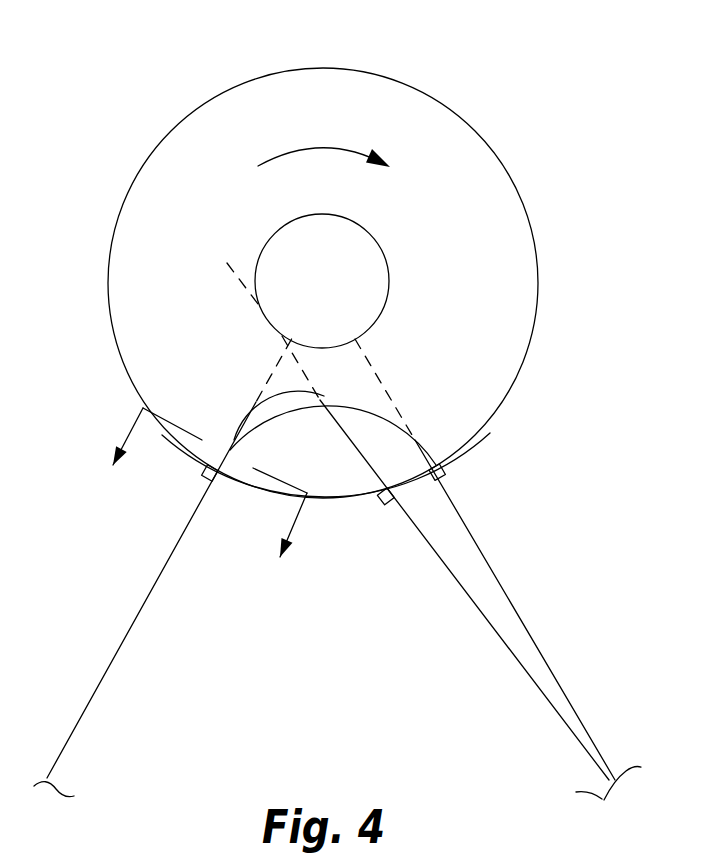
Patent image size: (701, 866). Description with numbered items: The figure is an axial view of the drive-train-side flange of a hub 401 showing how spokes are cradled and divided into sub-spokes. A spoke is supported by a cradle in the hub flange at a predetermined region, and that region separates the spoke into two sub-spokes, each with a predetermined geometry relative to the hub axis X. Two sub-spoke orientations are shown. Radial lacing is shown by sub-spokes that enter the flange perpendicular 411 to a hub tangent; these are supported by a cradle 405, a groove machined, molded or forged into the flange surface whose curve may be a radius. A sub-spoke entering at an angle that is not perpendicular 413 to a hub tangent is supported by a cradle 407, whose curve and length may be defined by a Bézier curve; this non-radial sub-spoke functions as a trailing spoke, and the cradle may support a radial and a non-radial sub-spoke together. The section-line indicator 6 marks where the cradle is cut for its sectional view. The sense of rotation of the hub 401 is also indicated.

The hub 401 is at (142, 84).
The cradle 405 is at (267, 425).
The cradle 407 is at (372, 462).
The perpendicular 411 is at (268, 380).
The not perpendicular 413 is at (236, 275).
The section view of a cradle 6 is at (195, 507).